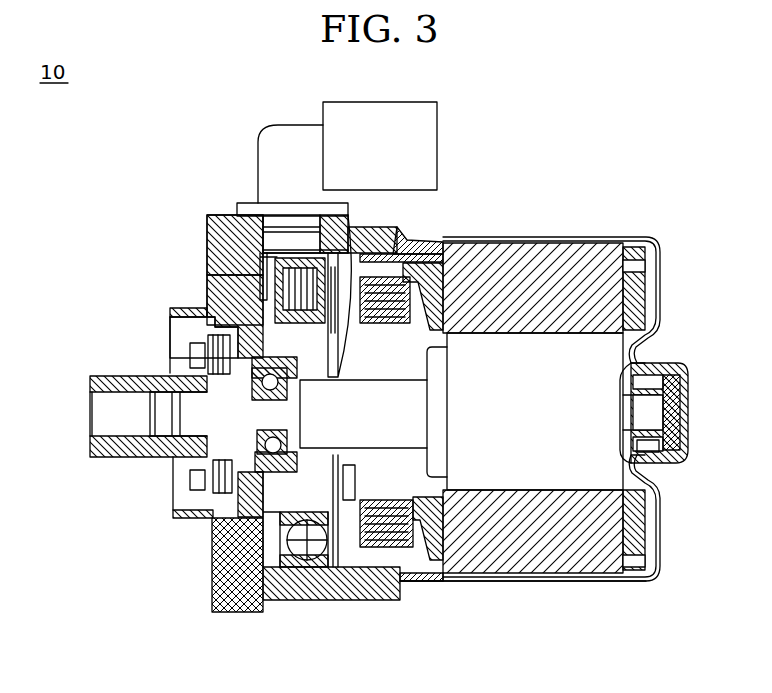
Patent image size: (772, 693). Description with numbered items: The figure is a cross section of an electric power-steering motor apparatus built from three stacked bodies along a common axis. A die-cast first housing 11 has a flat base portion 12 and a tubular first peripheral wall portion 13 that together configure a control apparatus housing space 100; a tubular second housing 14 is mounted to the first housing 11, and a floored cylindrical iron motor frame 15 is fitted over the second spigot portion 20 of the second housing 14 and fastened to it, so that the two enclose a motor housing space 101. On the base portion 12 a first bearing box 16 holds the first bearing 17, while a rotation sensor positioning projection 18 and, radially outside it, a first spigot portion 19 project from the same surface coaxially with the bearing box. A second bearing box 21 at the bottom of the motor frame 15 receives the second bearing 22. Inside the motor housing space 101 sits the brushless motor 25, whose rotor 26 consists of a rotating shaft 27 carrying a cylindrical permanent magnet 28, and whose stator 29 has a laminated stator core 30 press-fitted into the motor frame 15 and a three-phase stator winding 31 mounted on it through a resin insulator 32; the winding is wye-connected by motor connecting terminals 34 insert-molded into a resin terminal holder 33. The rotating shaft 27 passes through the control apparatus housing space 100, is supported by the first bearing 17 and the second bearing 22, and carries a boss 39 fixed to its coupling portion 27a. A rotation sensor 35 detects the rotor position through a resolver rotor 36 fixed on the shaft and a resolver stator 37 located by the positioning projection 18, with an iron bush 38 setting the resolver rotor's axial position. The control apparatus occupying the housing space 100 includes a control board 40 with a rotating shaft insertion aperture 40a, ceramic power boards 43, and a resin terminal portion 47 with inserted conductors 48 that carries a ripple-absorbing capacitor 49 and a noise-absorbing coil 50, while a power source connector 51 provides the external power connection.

The first housing 11 is at (205, 186).
The base portion 12 is at (247, 222).
The first peripheral wall portion 13 is at (330, 220).
The second housing 14 is at (391, 611).
The motor frame 15 is at (540, 585).
The first bearing box 16 is at (210, 300).
The first bearing 17 is at (187, 340).
The rotation sensor positioning projection 18 is at (185, 305).
The first spigot portion 19 is at (185, 523).
The second spigot portion 20 is at (418, 595).
The second bearing box 21 is at (655, 362).
The second bearing 22 is at (675, 372).
The brushless motor 25 is at (640, 515).
The rotor 26 is at (665, 448).
The rotating shaft 27 is at (385, 598).
The coupling portion 27a is at (165, 395).
The permanent magnet 28 is at (625, 470).
The stator 29 is at (619, 190).
The stator core 30 is at (568, 255).
The three-phase stator winding 31 is at (623, 260).
The resin insulator 32 is at (655, 262).
The resin terminal holder 33 is at (425, 262).
The motor connecting terminals 34 is at (402, 258).
The rotation sensor 35 is at (105, 470).
The resolver rotor 36 is at (190, 463).
The resolver stator 37 is at (190, 478).
The bush 38 is at (210, 355).
The boss 39 is at (92, 384).
The control board 40 is at (360, 570).
The rotating shaft insertion aperture 40a is at (365, 252).
The power boards 43 is at (215, 255).
The terminal portion 47 is at (215, 612).
The inserted conductors 48 is at (230, 565).
The capacitor 49 is at (305, 565).
The coil 50 is at (210, 222).
The power source connector 51 is at (435, 122).
The control apparatus housing space 100 is at (213, 540).
The motor housing space 101 is at (462, 585).